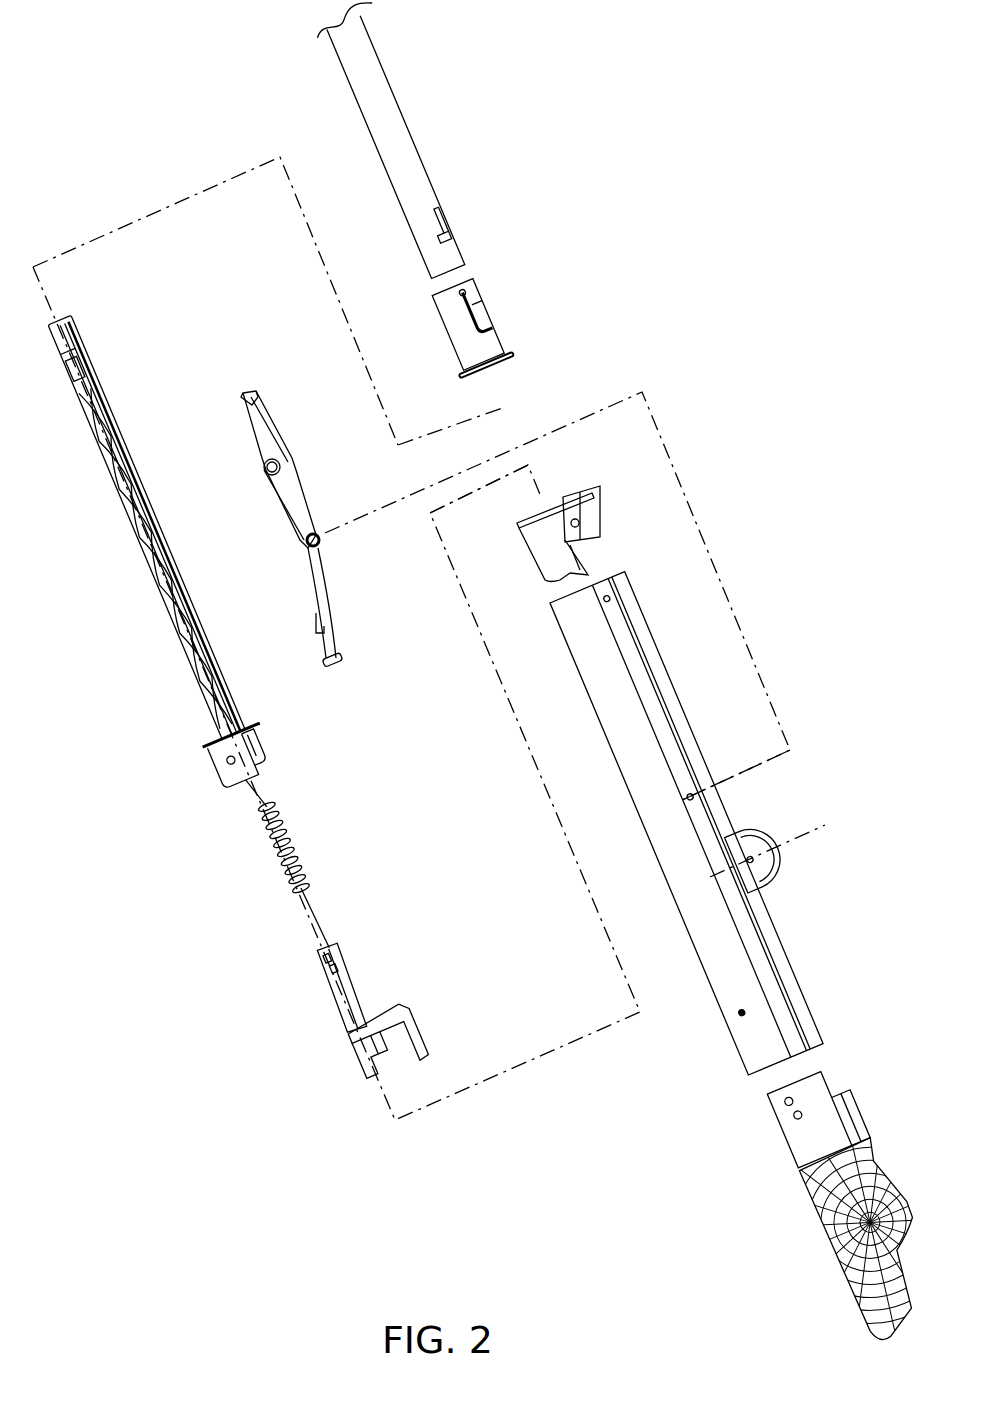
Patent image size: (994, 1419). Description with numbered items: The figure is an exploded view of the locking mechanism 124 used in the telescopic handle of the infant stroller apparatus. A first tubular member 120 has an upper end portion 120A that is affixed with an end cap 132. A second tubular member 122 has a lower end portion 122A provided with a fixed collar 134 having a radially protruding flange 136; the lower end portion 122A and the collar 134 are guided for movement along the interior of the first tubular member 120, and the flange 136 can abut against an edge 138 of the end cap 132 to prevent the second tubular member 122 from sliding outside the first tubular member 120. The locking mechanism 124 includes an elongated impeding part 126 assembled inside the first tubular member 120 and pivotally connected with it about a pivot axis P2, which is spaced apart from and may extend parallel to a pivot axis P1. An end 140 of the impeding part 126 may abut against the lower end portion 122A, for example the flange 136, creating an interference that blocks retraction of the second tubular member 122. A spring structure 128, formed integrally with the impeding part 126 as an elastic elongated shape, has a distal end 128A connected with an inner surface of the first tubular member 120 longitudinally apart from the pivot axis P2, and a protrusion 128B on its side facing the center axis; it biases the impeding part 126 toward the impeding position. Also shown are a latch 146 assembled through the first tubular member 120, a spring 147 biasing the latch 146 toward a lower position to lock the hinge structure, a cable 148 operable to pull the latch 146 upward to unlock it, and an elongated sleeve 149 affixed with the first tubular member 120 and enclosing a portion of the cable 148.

The first tubular member 120 is at (750, 1045).
The upper end portion 120A is at (534, 630).
The second tubular member 122 is at (436, 141).
The lower end portion 122A is at (462, 222).
The locking mechanism 124 is at (636, 362).
The impeding part 126 is at (276, 438).
The spring structure 128 is at (315, 631).
The distal end 128A is at (331, 668).
The protrusion 128B is at (318, 625).
The end cap 132 is at (585, 512).
The collar 134 is at (496, 330).
The flange 136 is at (512, 355).
The edge 138 is at (570, 550).
The end 140 is at (248, 390).
The latch 146 is at (360, 1060).
The spring 147 is at (263, 835).
The cable 148 is at (305, 912).
The elongated sleeve 149 is at (180, 620).
The pivot axis P1 is at (808, 834).
The pivot axis P2 is at (778, 760).